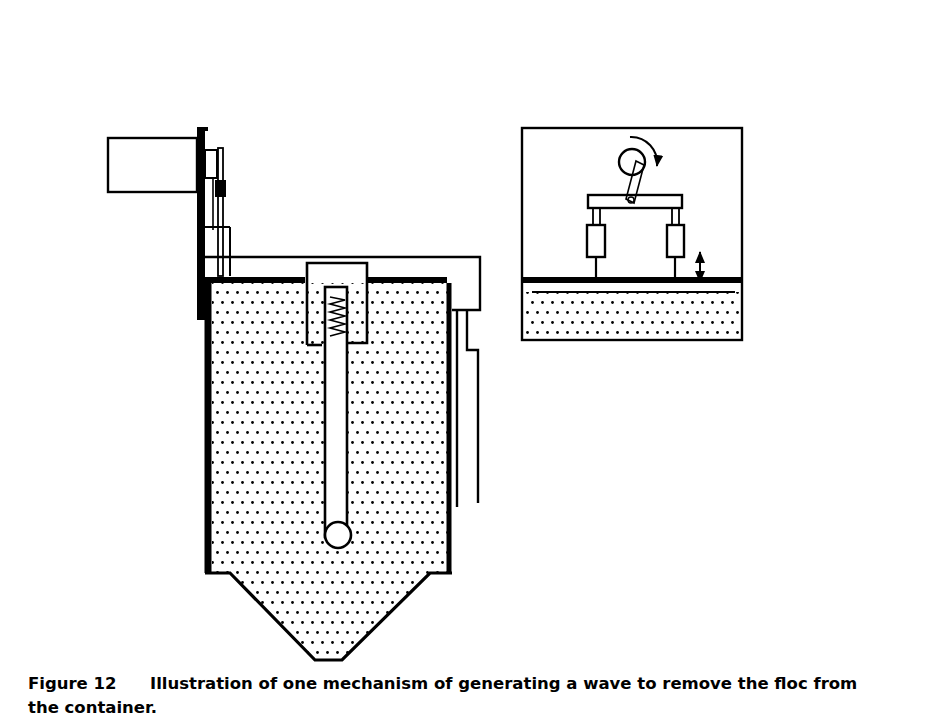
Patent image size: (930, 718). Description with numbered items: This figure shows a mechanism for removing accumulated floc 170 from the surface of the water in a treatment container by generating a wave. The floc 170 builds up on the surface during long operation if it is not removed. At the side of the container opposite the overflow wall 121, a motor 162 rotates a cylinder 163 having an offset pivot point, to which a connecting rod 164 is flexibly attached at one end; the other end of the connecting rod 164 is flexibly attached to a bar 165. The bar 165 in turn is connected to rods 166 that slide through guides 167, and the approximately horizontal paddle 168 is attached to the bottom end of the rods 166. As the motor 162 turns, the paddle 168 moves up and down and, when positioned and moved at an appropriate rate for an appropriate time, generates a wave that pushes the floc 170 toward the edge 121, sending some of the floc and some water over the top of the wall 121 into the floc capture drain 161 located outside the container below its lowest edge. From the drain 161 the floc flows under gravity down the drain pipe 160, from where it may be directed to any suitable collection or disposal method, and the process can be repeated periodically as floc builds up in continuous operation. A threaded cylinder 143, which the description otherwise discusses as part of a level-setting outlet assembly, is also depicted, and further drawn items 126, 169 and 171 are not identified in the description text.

The overflow wall 121 is at (446, 287).
The ball 126 is at (333, 535).
The threaded cylinder 143 is at (352, 313).
The drain pipe 160 is at (470, 490).
The floc capture drain 161 is at (322, 346).
The motor 162 is at (140, 155).
The cylinder 163 is at (521, 123).
The connecting rod 164 is at (238, 234).
The bar 165 is at (232, 189).
The rods 166 is at (232, 206).
The guides 167 is at (239, 235).
The paddle 168 is at (553, 281).
The rod 169 is at (626, 177).
The floc 170 is at (276, 274).
The liquid 171 is at (268, 475).